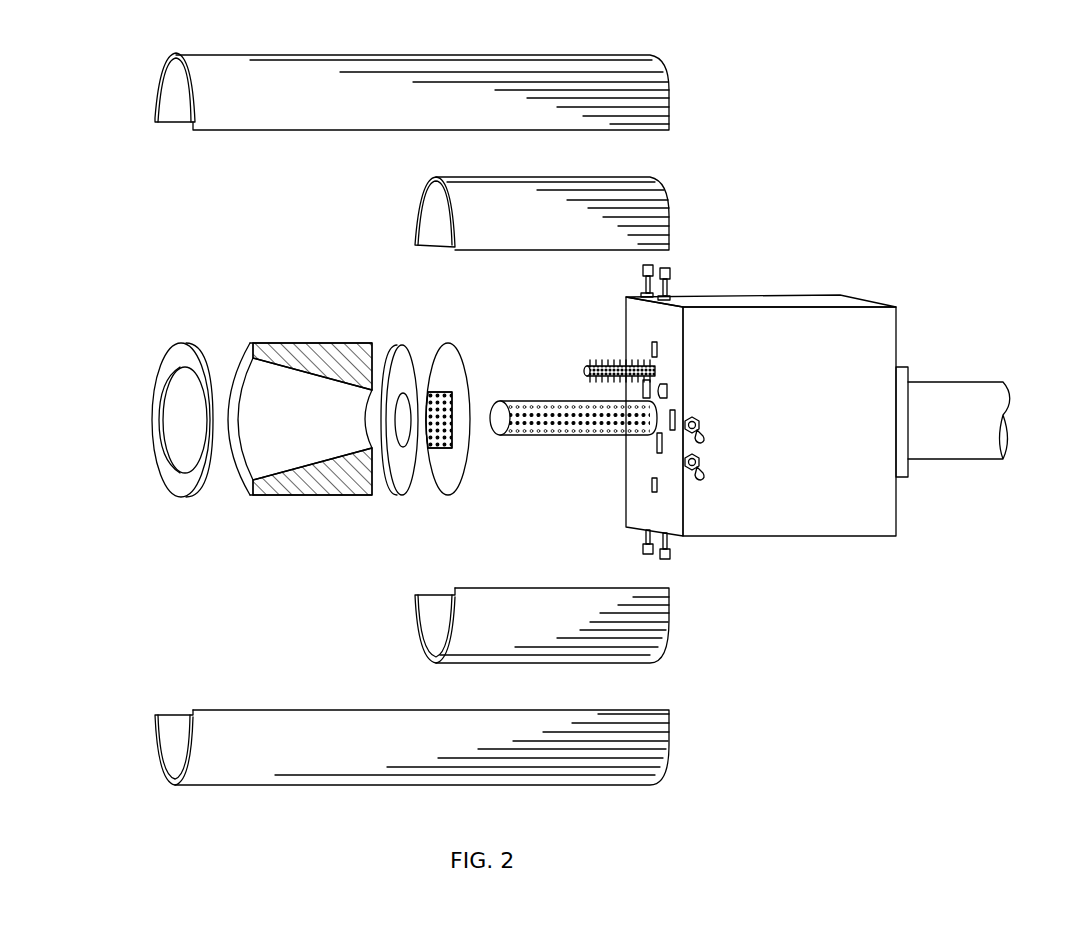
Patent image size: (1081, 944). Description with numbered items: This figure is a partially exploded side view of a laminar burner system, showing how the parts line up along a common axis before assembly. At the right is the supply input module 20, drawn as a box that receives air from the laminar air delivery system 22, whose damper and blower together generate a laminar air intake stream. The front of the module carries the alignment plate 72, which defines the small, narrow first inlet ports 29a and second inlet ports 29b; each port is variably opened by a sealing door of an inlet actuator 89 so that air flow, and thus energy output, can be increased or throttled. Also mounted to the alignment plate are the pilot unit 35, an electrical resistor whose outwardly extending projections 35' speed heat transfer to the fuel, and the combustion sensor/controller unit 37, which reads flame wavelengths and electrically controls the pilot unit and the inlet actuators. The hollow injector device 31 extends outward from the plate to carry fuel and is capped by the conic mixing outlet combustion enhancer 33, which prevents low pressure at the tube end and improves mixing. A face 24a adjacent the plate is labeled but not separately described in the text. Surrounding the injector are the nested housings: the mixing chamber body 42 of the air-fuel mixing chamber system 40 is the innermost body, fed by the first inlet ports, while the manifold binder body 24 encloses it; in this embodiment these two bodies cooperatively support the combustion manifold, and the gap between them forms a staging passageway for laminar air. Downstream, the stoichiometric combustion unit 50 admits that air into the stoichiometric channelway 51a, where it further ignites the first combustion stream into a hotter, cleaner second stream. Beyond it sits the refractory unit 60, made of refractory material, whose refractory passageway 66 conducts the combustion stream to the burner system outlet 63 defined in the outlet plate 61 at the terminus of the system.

The supply input module 20 is at (744, 394).
The laminar air delivery system 22 is at (996, 340).
The manifold binder body 24 is at (650, 92).
The housing front face 24a is at (643, 313).
The first inlet ports 29a is at (660, 350).
The second inlet ports 29b is at (643, 389).
The injector device 31 is at (542, 423).
The mixing outlet combustion enhancer 33 is at (499, 412).
The pilot unit 35 is at (589, 363).
The outwardly extending projections 35' is at (585, 343).
The combustion sensor/controller unit 37 is at (668, 390).
The air-fuel mixing chamber system 40 is at (657, 215).
The mixing chamber body 42 is at (511, 231).
The stoichiometric combustion unit 50 is at (413, 518).
The stoichiometric channelway 51a is at (400, 418).
The refractory unit 60 is at (330, 348).
The outlet plate 61 is at (178, 358).
The burner system outlet 63 is at (182, 420).
The refractory passageway 66 is at (293, 431).
The alignment plate 72 is at (676, 525).
The inlet actuators 89 is at (672, 271).